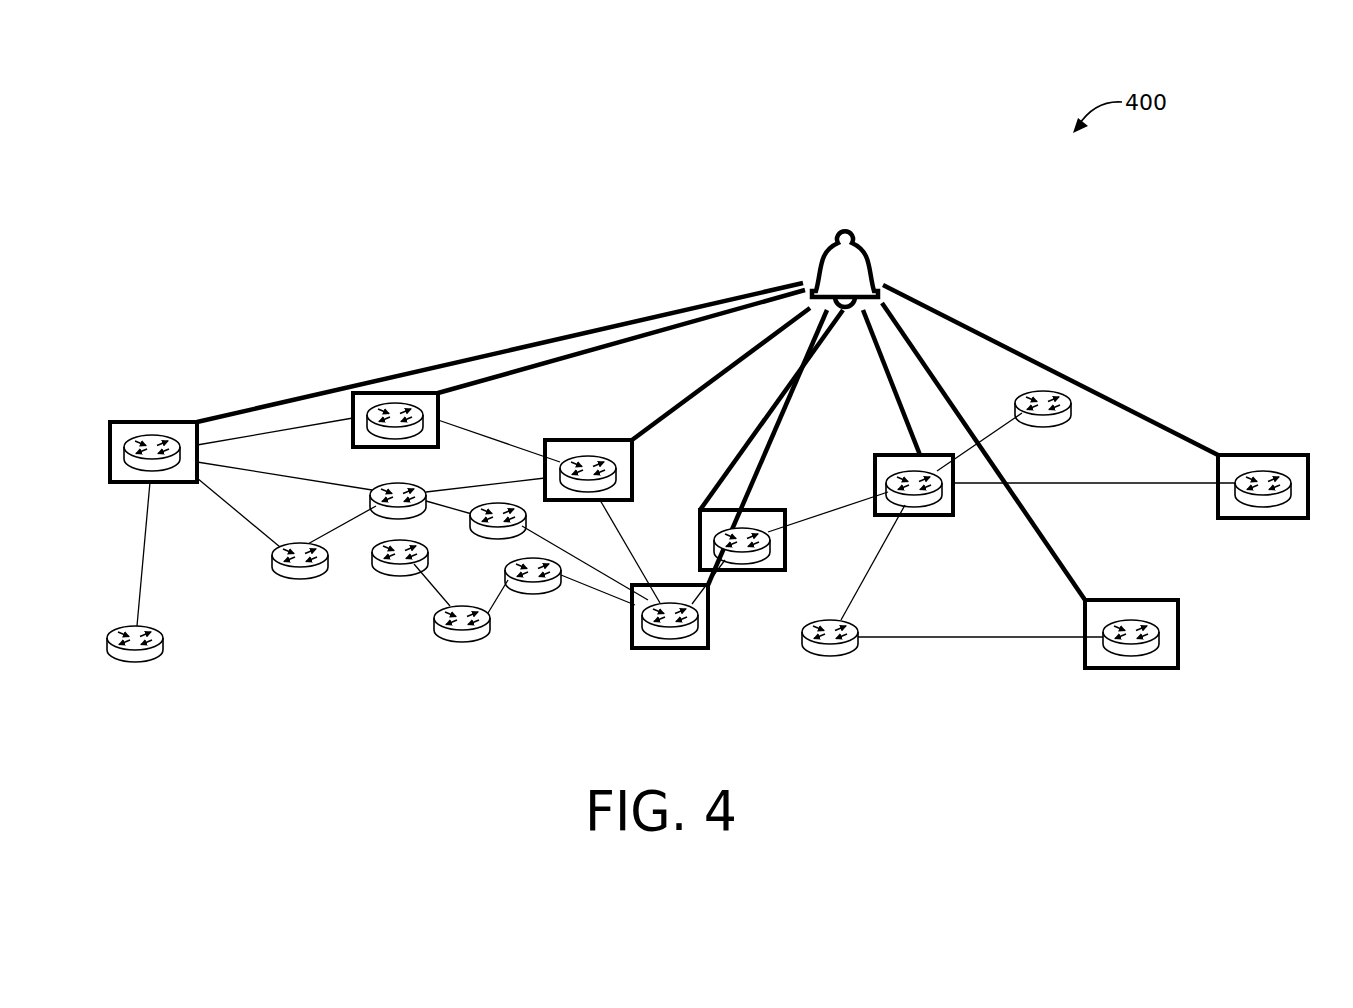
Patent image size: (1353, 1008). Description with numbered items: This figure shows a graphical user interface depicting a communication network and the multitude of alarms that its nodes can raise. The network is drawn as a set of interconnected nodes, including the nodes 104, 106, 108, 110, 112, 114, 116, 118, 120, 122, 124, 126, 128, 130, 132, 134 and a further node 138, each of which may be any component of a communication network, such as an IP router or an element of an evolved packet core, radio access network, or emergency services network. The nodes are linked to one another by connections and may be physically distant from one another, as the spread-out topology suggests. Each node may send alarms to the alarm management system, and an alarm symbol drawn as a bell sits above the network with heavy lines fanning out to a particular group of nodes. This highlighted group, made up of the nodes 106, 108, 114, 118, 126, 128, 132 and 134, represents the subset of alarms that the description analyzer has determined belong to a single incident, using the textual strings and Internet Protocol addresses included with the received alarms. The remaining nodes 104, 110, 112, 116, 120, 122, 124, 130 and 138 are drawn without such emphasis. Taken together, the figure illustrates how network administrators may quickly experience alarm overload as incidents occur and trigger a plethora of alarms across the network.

The node 104 is at (130, 658).
The node 106 is at (142, 478).
The node 108 is at (405, 445).
The node 110 is at (388, 482).
The node 112 is at (296, 585).
The node 114 is at (578, 456).
The node 116 is at (528, 521).
The node 118 is at (666, 643).
The node 120 is at (533, 596).
The node 122 is at (458, 645).
The node 124 is at (395, 578).
The node 126 is at (760, 566).
The node 128 is at (898, 468).
The node 130 is at (827, 657).
The node 132 is at (1120, 660).
The node 134 is at (1272, 466).
The network device 138 is at (1053, 428).